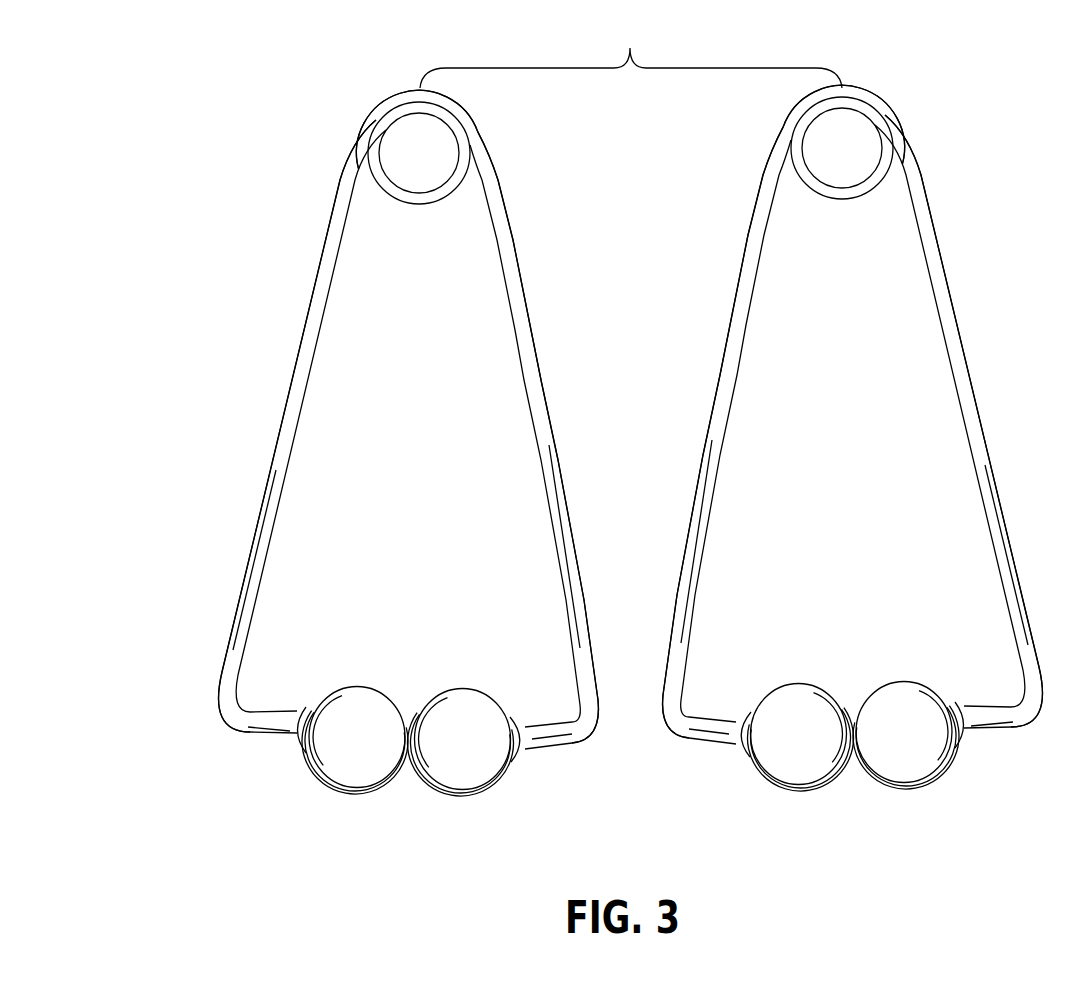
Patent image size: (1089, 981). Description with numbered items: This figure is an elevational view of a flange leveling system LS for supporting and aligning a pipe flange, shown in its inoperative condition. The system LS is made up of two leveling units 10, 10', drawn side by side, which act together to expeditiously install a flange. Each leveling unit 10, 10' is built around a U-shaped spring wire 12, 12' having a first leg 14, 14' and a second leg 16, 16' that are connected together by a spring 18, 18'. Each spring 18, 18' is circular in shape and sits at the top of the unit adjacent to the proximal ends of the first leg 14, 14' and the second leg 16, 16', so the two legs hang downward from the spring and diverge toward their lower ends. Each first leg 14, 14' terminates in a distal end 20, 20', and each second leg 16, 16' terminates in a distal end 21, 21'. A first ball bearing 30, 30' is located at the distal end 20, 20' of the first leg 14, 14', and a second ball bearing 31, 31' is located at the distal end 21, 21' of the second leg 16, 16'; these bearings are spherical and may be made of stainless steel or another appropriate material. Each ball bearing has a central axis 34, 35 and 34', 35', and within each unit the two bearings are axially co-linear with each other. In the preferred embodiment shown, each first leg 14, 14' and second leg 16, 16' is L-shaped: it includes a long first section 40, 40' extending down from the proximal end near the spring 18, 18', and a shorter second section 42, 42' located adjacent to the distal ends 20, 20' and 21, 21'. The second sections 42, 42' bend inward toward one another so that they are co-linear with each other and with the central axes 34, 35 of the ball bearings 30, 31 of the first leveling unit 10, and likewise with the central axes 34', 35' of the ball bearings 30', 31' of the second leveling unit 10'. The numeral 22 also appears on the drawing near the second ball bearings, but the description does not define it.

The flange leveling system LS is at (631, 49).
The leveling unit 10 is at (409, 416).
The leveling unit 10' is at (868, 411).
The U-shaped spring wire 12 is at (296, 396).
The U-shaped spring wire 12' is at (976, 391).
The first leg 14 is at (312, 402).
The first leg 14' is at (875, 397).
The second leg 16 is at (523, 418).
The second leg 16' is at (727, 413).
The spring 18 is at (401, 129).
The spring 18' is at (934, 319).
The distal end 20 is at (604, 743).
The distal end 20' is at (720, 702).
The distal end 21 is at (541, 706).
The distal end 21' is at (983, 691).
The second ball cup 22 is at (508, 774).
The first ball bearing 30 is at (357, 702).
The first ball bearing 30' is at (799, 700).
The second ball bearing 31 is at (463, 704).
The second ball bearing 31' is at (904, 699).
The central axis 34 is at (359, 760).
The central axis 34' is at (807, 766).
The central axis 35 is at (442, 766).
The central axis 35' is at (913, 763).
The first section 40 is at (376, 592).
The first section 40' is at (854, 587).
The second section 42 is at (392, 732).
The second section 42' is at (853, 737).